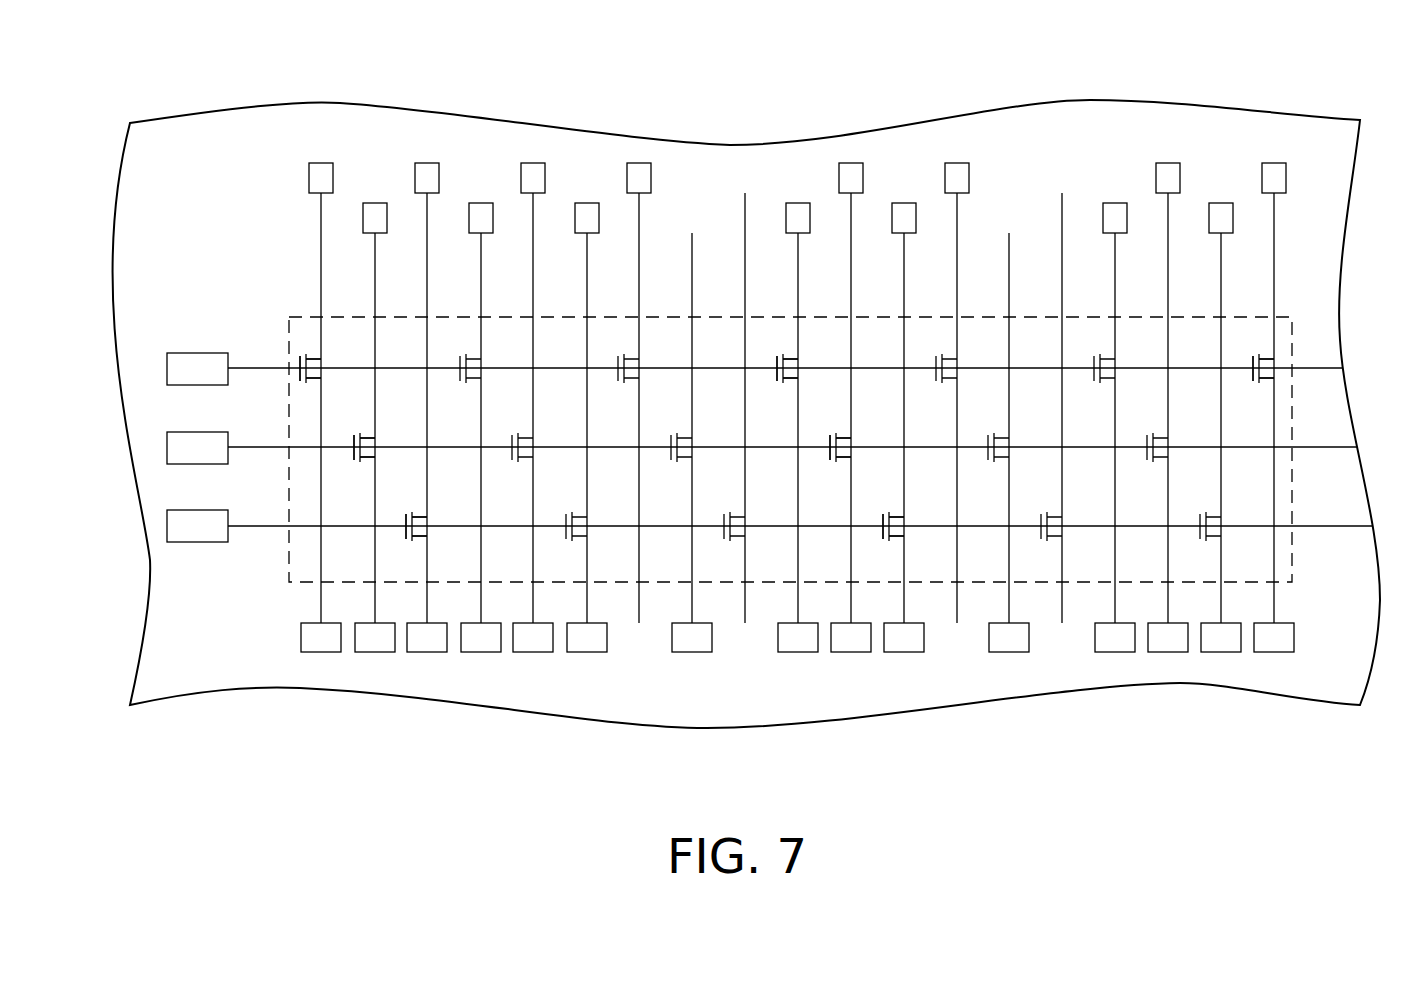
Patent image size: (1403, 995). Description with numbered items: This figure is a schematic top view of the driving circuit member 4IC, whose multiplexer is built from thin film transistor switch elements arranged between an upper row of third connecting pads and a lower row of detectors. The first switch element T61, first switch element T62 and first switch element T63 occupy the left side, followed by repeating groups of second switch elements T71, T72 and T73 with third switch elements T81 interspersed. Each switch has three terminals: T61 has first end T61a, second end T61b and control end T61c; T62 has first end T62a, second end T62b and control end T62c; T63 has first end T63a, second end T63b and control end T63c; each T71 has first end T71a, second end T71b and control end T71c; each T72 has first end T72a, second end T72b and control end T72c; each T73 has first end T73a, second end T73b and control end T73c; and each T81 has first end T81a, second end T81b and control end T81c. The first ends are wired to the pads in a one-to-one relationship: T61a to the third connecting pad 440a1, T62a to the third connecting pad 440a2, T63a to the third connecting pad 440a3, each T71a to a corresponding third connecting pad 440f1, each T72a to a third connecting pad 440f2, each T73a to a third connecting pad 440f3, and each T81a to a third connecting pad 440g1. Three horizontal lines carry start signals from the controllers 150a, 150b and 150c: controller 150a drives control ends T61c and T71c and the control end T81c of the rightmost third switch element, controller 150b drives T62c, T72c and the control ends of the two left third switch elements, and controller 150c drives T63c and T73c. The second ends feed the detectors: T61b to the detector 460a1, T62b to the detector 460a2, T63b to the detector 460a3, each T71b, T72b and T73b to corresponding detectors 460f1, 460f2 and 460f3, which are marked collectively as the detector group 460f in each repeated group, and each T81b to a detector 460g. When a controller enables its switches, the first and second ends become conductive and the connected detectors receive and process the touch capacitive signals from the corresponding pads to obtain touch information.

The controller 150a is at (167, 360).
The controller 150b is at (167, 449).
The controller 150c is at (167, 528).
The third connecting pad 440a1 is at (321, 163).
The third connecting pad 440a2 is at (375, 203).
The third connecting pad 440a3 is at (427, 163).
The third connecting pad 440f1 is at (481, 203).
The third connecting pad 440f2 is at (533, 163).
The third connecting pad 440f3 is at (587, 203).
The third connecting pad 440g1 is at (639, 163).
The detector 460a1 is at (321, 652).
The detector 460a2 is at (375, 652).
The detector 460a3 is at (427, 652).
The detector 460f1 is at (481, 652).
The detector 460f2 is at (533, 652).
The detector 460f3 is at (587, 652).
The detector 460g is at (692, 652).
The lower pad 460f is at (904, 652).
The first switch element T61 is at (330, 358).
The first end T61a is at (306, 354).
The second end T61b is at (306, 383).
The control end T61c is at (300, 356).
The first switch element T62 is at (381, 440).
The first end T62a is at (360, 433).
The second end T62b is at (360, 462).
The control end T62c is at (352, 443).
The first switch element T63 is at (433, 514).
The first end T63a is at (412, 512).
The second end T63b is at (412, 541).
The control end T63c is at (406, 533).
The second switch element T71 is at (804, 356).
The first end T71a is at (783, 354).
The second end T71b is at (783, 383).
The control end T71c is at (777, 365).
The second switch element T72 is at (857, 434).
The first end T72a is at (836, 433).
The second end T72b is at (836, 462).
The control end T72c is at (830, 448).
The second switch element T73 is at (911, 514).
The first end T73a is at (889, 512).
The second end T73b is at (889, 541).
The control end T73c is at (883, 530).
The third switch element T81 is at (991, 399).
The first end T81a is at (1259, 354).
The second end T81b is at (1259, 383).
The control end T81c is at (1253, 358).
The driving circuit member 4IC is at (1393, 785).